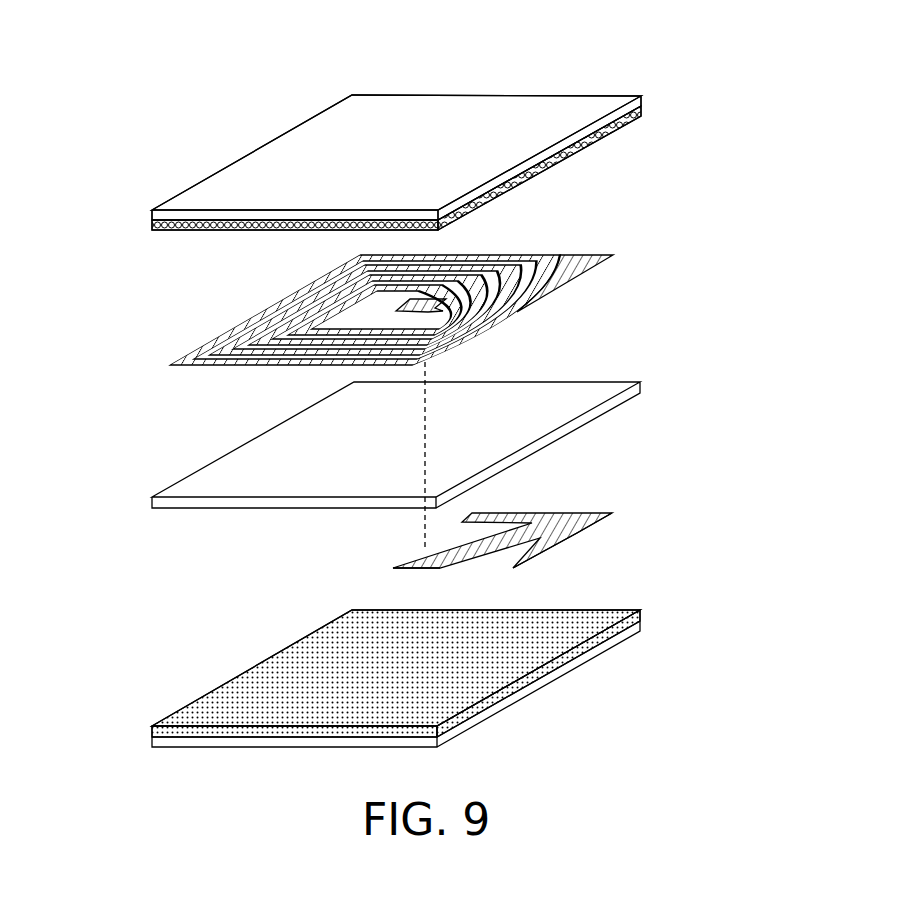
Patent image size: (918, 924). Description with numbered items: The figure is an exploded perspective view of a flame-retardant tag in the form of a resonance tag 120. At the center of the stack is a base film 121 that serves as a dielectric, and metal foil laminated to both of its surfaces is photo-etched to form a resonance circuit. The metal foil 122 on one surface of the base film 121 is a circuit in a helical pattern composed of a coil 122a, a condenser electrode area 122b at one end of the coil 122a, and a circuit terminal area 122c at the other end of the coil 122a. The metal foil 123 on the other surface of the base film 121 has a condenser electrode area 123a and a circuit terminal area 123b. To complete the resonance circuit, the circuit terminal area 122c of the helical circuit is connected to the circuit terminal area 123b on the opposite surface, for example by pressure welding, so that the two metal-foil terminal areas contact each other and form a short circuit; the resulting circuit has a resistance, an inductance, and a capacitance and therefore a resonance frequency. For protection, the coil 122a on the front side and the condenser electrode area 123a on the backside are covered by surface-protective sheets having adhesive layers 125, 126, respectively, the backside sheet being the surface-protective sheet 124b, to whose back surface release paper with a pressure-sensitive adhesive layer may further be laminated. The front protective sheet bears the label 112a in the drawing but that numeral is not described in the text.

The resonance tag 120 is at (490, 78).
The upper cover sheet 112a is at (641, 97).
The adhesive layer 125 is at (152, 225).
The metal foil 122 is at (515, 248).
The coil 122a is at (262, 312).
The condenser electrode area 122b is at (588, 257).
The circuit terminal area 122c is at (517, 311).
The base film 121 is at (582, 398).
The metal foil 123 is at (566, 503).
The condenser electrode area 123a is at (578, 525).
The circuit terminal area 123b is at (427, 553).
The adhesive layer 126 is at (245, 683).
The surface-protective sheet 124b is at (547, 680).